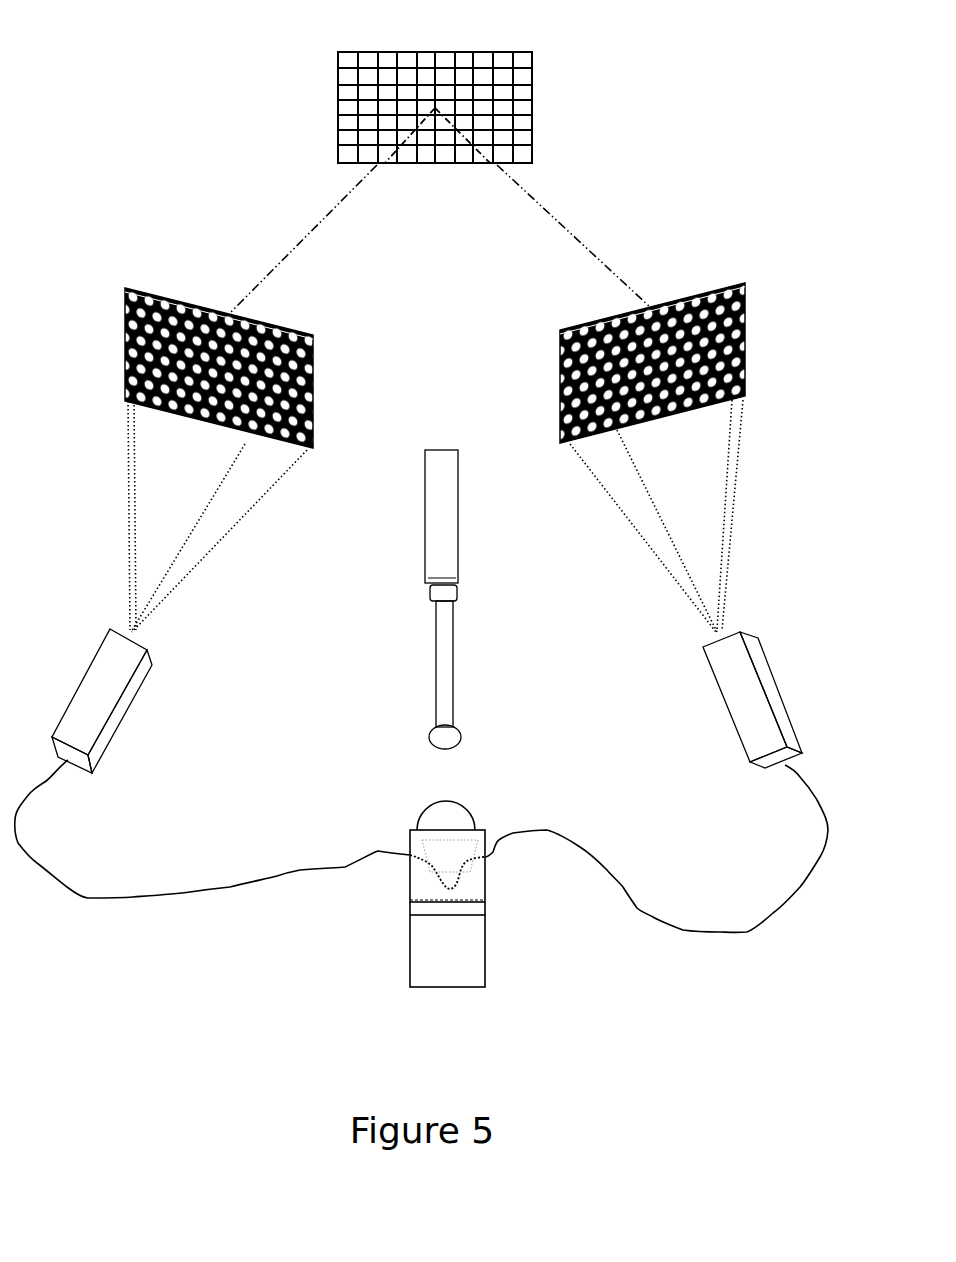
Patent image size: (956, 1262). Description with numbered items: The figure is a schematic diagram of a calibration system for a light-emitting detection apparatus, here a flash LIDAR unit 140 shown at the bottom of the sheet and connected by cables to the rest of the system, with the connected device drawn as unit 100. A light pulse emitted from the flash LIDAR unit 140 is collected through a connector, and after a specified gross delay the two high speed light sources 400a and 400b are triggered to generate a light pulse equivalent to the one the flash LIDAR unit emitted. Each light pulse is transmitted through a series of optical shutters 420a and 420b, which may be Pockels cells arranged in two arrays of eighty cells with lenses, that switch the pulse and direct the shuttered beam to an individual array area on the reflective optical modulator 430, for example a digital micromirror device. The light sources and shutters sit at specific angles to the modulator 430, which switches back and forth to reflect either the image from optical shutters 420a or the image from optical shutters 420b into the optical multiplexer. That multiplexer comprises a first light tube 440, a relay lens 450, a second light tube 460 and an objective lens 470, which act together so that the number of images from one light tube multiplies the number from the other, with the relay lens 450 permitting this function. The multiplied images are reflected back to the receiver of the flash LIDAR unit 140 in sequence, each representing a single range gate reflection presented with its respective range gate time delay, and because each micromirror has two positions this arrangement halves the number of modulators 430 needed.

The reflective optical modulator 430 is at (435, 85).
The optical shutters 420a is at (184, 368).
The optical shutters 420b is at (693, 363).
The high speed light source 400a is at (75, 713).
The high speed light source 400b is at (785, 713).
The first light tube 440 is at (450, 495).
The relay lens 450 is at (450, 594).
The second light tube 460 is at (452, 662).
The objective lens 470 is at (450, 727).
The control unit 100 is at (438, 887).
The flash LIDAR unit 140 is at (472, 963).